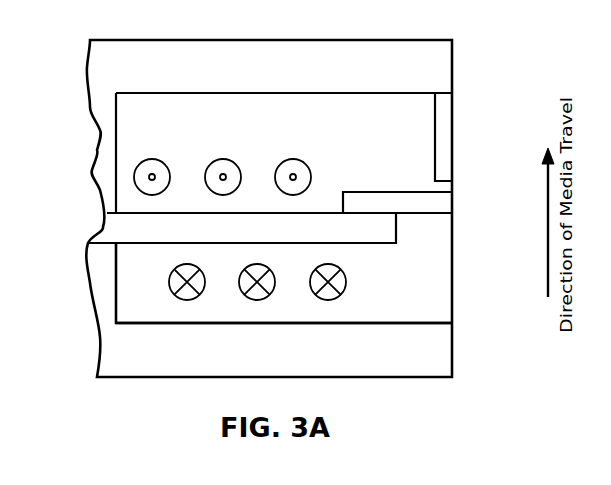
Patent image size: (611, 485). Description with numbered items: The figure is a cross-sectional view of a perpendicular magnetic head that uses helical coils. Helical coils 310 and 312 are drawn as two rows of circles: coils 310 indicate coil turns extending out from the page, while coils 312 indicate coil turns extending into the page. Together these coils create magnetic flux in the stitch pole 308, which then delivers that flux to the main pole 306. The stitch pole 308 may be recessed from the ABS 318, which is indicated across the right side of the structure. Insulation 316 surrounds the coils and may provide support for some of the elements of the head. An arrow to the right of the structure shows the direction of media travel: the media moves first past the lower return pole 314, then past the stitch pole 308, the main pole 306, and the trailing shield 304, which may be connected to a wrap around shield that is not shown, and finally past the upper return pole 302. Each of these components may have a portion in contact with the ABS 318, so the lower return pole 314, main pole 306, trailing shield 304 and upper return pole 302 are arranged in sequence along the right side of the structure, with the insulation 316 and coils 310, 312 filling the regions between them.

The upper return pole 302 is at (284, 75).
The trailing shield 304 is at (452, 140).
The main pole 306 is at (452, 197).
The stitch pole 308 is at (242, 228).
The helical coils 310 is at (147, 158).
The helical coils 312 is at (169, 283).
The lower return pole 314 is at (284, 342).
The insulation 316 is at (279, 208).
The ABS 318 is at (452, 58).